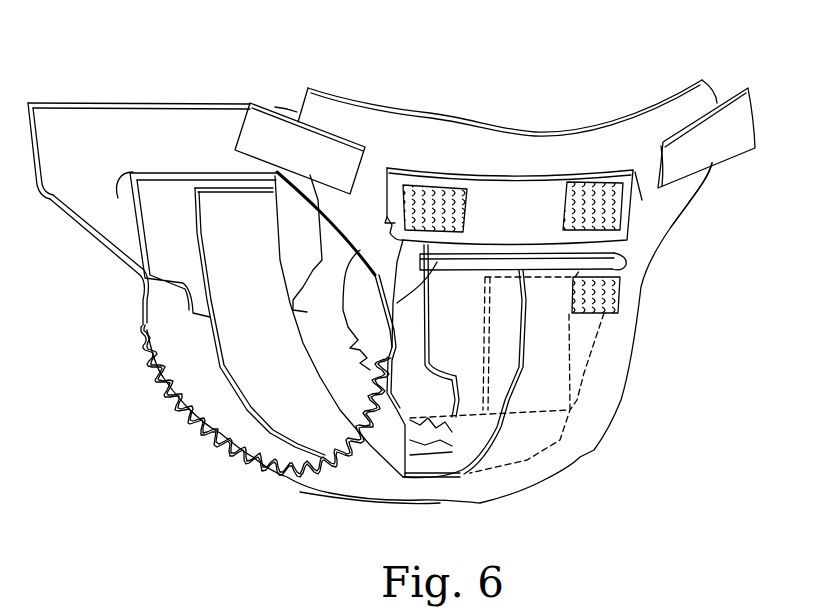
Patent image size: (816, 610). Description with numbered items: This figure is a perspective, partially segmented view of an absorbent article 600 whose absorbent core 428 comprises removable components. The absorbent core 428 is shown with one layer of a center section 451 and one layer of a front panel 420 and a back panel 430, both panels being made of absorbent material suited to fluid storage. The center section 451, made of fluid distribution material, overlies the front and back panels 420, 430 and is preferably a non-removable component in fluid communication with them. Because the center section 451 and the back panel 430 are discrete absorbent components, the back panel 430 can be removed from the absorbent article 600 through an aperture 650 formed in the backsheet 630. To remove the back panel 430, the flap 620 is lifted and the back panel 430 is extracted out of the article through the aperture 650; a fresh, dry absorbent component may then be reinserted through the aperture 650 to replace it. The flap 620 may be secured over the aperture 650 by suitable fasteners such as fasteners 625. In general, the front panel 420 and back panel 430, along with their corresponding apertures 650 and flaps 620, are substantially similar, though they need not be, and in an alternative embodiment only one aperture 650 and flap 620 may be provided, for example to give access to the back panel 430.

The front panel 420 is at (157, 213).
The absorbent core 428 is at (172, 301).
The back panel 430 is at (447, 360).
The center section 451 is at (277, 347).
The absorbent article 600 is at (255, 477).
The flap 620 is at (500, 210).
The fasteners 625 is at (578, 207).
The backsheet 630 is at (619, 347).
The aperture 650 is at (121, 176).